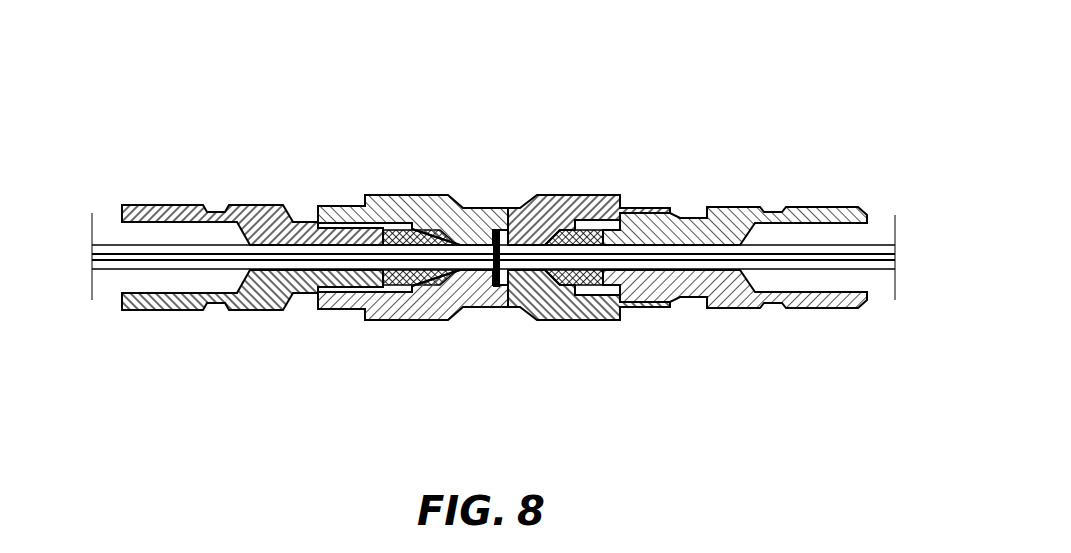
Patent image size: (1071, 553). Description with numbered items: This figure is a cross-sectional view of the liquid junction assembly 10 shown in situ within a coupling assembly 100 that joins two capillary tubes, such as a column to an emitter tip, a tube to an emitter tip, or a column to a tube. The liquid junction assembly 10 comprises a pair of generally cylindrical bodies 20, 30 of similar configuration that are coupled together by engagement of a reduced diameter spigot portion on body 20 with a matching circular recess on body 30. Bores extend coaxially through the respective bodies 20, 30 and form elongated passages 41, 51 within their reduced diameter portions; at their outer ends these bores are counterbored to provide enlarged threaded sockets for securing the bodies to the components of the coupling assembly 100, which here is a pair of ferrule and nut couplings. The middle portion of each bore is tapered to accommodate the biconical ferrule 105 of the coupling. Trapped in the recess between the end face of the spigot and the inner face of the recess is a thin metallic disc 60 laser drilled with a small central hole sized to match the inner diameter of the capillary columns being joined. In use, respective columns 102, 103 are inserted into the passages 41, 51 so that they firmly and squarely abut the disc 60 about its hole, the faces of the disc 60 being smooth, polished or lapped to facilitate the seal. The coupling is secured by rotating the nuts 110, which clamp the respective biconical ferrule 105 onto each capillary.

The liquid junction assembly 10 is at (494, 229).
The body 20 is at (610, 183).
The body 30 is at (379, 183).
The passage 41 is at (525, 248).
The passage 51 is at (428, 243).
The disc 60 is at (492, 288).
The coupling assembly 100 is at (494, 204).
The column 102 is at (878, 245).
The column 103 is at (108, 243).
The biconical ferrule 105 is at (400, 287).
The nut 110 is at (248, 205).